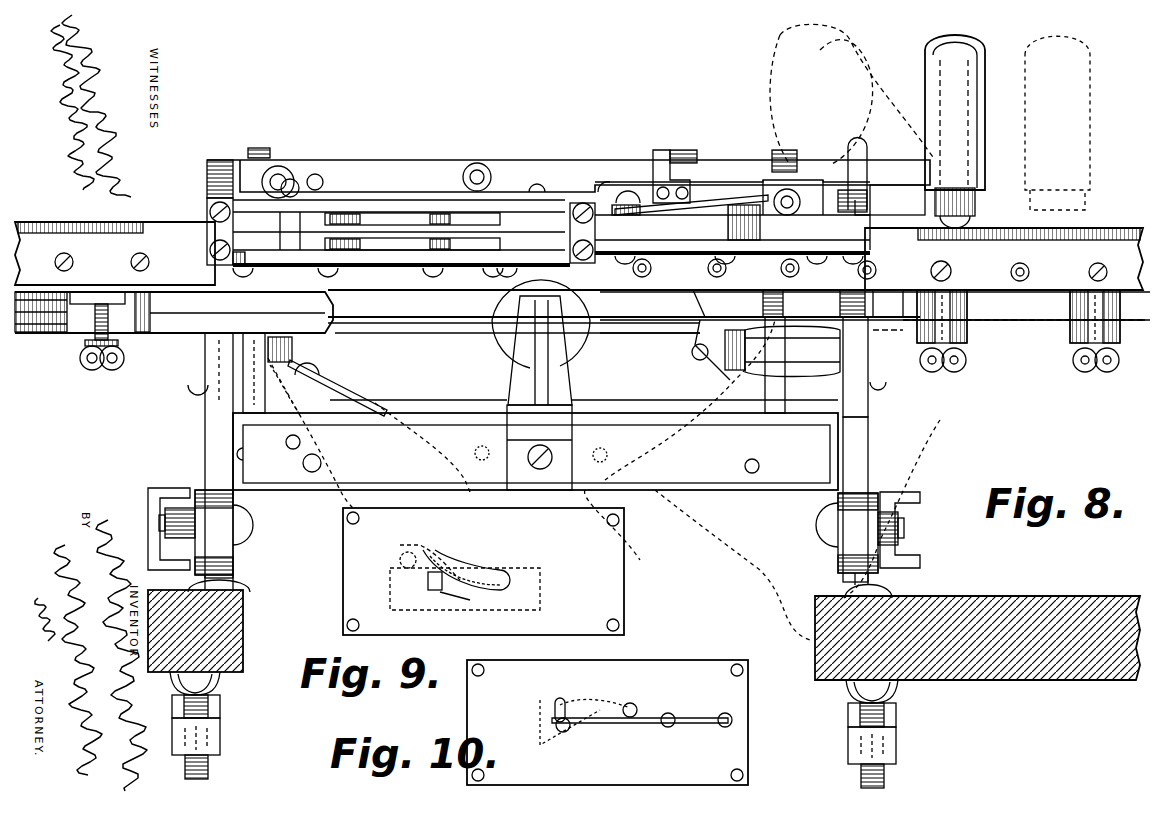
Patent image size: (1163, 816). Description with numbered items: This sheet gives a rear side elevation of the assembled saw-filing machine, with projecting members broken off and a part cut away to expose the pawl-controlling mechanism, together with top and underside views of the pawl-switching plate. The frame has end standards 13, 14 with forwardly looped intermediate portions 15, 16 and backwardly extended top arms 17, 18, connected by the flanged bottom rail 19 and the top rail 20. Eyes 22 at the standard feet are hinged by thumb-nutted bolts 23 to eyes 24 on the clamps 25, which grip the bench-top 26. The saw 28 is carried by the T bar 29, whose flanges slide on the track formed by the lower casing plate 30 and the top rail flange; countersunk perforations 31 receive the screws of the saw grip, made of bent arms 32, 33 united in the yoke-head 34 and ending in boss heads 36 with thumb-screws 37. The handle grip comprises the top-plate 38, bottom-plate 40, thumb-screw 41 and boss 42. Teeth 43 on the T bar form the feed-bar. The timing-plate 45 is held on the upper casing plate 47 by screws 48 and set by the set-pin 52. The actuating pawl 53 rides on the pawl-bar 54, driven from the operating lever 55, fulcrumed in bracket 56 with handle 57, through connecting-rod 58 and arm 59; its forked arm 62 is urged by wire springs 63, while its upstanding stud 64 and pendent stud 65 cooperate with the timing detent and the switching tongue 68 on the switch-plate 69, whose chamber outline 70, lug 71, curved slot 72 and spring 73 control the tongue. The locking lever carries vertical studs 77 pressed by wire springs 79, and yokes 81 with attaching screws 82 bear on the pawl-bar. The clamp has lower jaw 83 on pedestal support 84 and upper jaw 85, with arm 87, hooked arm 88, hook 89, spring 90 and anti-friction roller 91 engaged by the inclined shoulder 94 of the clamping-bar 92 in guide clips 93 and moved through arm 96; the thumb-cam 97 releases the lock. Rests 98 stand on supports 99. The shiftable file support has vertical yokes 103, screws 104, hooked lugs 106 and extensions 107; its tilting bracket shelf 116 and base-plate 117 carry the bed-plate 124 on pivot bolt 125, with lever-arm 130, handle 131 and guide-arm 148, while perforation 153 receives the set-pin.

In FIG. 8, the end standard 13 is at (205, 458).
In FIG. 8, the end standard 14 is at (868, 462).
In FIG. 8, the intermediate portion 15 is at (245, 360).
In FIG. 8, the intermediate portion 16 is at (845, 370).
In FIG. 8, the top arm 17 is at (220, 160).
In FIG. 8, the top arm 18 is at (870, 230).
In FIG. 8, the bottom rail 19 is at (762, 530).
In FIG. 8, the top rail 20 is at (535, 160).
In FIG. 8, the eyes 22 is at (225, 548).
In FIG. 8, the thumb-nutted bolts 23 is at (165, 512).
In FIG. 8, the eyes 24 is at (225, 572).
In FIG. 8, the clamps 25 is at (220, 710).
In FIG. 8, the bench-top 26 is at (232, 610).
In FIG. 8, the saw 28 is at (195, 318).
In FIG. 8, the T bar 29 is at (1052, 263).
In FIG. 8, the lower casing plate 30 is at (834, 281).
In FIG. 8, the countersunk perforations 31 is at (680, 302).
In FIG. 8, the bent arm 32 is at (1080, 350).
In FIG. 8, the bent arm 33 is at (960, 345).
In FIG. 8, the yoke-head 34 is at (1022, 322).
In FIG. 8, the boss heads 36 is at (958, 373).
In FIG. 8, the thumb-screws 37 is at (948, 373).
In FIG. 8, the top-plate 38 is at (102, 254).
In FIG. 8, the bottom-plate 40 is at (60, 332).
In FIG. 8, the thumb-screw 41 is at (90, 368).
In FIG. 8, the boss 42 is at (85, 304).
In FIG. 8, the teeth 43 is at (60, 236).
In FIG. 8, the timing-plate 45 is at (398, 213).
In FIG. 8, the upper casing plate 47 is at (590, 205).
In FIG. 8, the screws 48 is at (292, 180).
In FIG. 8, the set-pin 52 is at (477, 162).
In FIG. 8, the actuating pawl 53 is at (420, 216).
In FIG. 8, the pawl-bar 54 is at (165, 222).
In FIG. 8, the operating lever 55 is at (975, 210).
In FIG. 8, the bracket 56 is at (910, 200).
In FIG. 8, the handle 57 is at (1007, 122).
In FIG. 8, the connecting-rod 58 is at (900, 215).
In FIG. 8, the arm 59 is at (745, 242).
In FIG. 8, the forked arm 62 is at (332, 213).
In FIG. 8, the wire springs 63 is at (390, 216).
In FIG. 8, the upstanding stud 64 is at (352, 213).
In FIG. 8, the pendent stud 65 is at (380, 268).
In FIG. 9, the pendent stud 65 is at (400, 560).
In FIG. 8, the switching tongue 68 is at (418, 268).
In FIG. 9, the switching tongue 68 is at (462, 575).
In FIG. 10, the switching tongue 68 is at (598, 705).
In FIG. 8, the switch-plate 69 is at (515, 272).
In FIG. 9, the switch-plate 69 is at (483, 571).
In FIG. 10, the switch-plate 69 is at (607, 722).
In FIG. 9, the opening outline 70 is at (542, 608).
In FIG. 8, the lug 71 is at (385, 268).
In FIG. 10, the lug 71 is at (570, 730).
In FIG. 9, the curved slot 72 is at (455, 598).
In FIG. 10, the curved slot 72 is at (550, 712).
In FIG. 8, the spring 73 is at (462, 268).
In FIG. 10, the spring 73 is at (650, 725).
In FIG. 8, the vertical studs 77 is at (628, 190).
In FIG. 8, the wire springs 79 is at (700, 250).
In FIG. 8, the vertical yokes 81 is at (210, 252).
In FIG. 8, the attaching screws 82 is at (210, 215).
In FIG. 8, the lower jaw 83 is at (515, 330).
In FIG. 8, the pedestal support 84 is at (539, 393).
In FIG. 8, the upper jaw 85 is at (565, 298).
In FIG. 8, the arm 87 is at (280, 166).
In FIG. 8, the hooked arm 88 is at (800, 185).
In FIG. 8, the hook 89 is at (780, 160).
In FIG. 8, the spring 90 is at (690, 150).
In FIG. 8, the anti-friction roller 91 is at (815, 185).
In FIG. 8, the clamping-bar 92 is at (740, 170).
In FIG. 8, the guide clips 93 is at (665, 150).
In FIG. 8, the inclined shoulder 94 is at (800, 200).
In FIG. 8, the arm 96 is at (777, 150).
In FIG. 8, the thumb-cam 97 is at (615, 205).
In FIG. 8, the rests 98 is at (233, 258).
In FIG. 8, the supports 99 is at (210, 350).
In FIG. 8, the vertical yokes 103 is at (250, 398).
In FIG. 8, the screws 104 is at (315, 174).
In FIG. 8, the hooked lugs 106 is at (258, 148).
In FIG. 8, the extensions 107 is at (438, 415).
In FIG. 8, the shelf 116 is at (297, 390).
In FIG. 8, the base-plate 117 is at (718, 370).
In FIG. 8, the bed-plate 124 is at (294, 345).
In FIG. 8, the pivot bolt 125 is at (521, 415).
In FIG. 8, the lever-arm 130 is at (737, 370).
In FIG. 8, the handle 131 is at (792, 351).
In FIG. 8, the guide-arm 148 is at (690, 352).
In FIG. 8, the perforation 153 is at (303, 443).